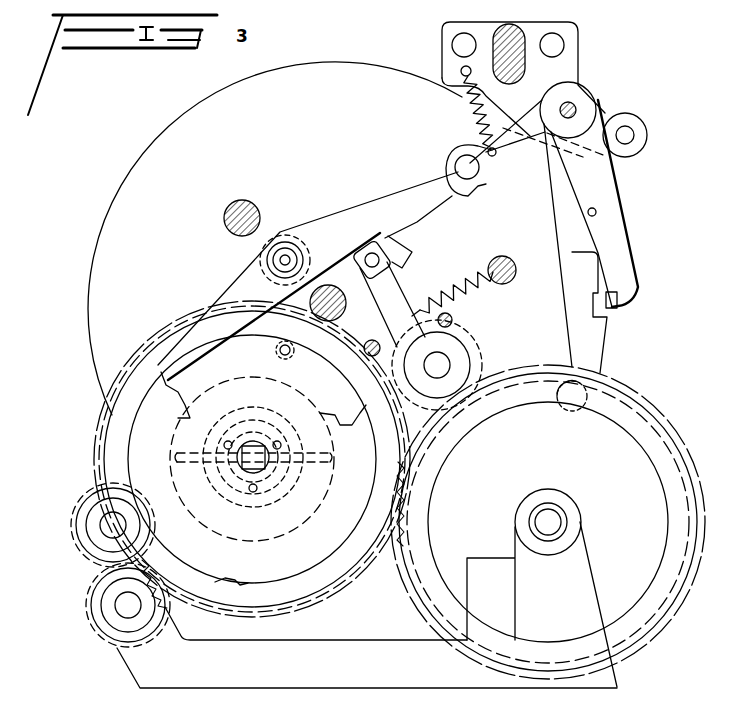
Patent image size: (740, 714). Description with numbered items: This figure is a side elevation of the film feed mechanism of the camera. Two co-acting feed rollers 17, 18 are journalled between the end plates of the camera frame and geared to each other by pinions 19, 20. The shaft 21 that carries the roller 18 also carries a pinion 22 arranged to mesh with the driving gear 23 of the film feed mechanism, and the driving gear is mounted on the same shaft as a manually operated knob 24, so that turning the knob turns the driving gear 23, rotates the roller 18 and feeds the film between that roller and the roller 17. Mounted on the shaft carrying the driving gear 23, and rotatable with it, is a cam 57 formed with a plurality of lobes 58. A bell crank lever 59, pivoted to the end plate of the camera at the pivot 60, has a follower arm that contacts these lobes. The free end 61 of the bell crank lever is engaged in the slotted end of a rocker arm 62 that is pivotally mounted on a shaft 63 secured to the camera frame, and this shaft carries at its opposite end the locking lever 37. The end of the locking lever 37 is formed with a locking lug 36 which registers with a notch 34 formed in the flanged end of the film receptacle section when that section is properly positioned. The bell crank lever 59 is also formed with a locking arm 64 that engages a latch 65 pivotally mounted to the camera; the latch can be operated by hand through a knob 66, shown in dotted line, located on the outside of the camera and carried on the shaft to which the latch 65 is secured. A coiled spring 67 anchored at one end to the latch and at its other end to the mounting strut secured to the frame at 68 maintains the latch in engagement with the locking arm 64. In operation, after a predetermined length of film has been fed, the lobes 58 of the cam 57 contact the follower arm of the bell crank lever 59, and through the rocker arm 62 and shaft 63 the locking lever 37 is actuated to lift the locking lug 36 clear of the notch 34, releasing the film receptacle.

The feed roller 17 is at (105, 525).
The feed roller 18 is at (118, 608).
The pinion 19 is at (80, 554).
The pinion 20 is at (112, 650).
The shaft 21 is at (124, 600).
The pinion 22 is at (178, 601).
The driving gear 23 is at (346, 589).
The manually operated knob 24 is at (185, 424).
The notch 34 is at (600, 310).
The locking lug 36 is at (614, 300).
The locking lever 37 is at (620, 262).
The cam 57 is at (277, 535).
The lobes 58 is at (252, 545).
The bell crank lever 59 is at (183, 378).
The pivot 60 is at (285, 255).
The free end 61 is at (375, 206).
The rocker arm 62 is at (498, 175).
The shaft 63 is at (576, 104).
The locking arm 64 is at (413, 258).
The latch 65 is at (372, 270).
The knob 66 is at (476, 338).
The coiled spring 67 is at (462, 276).
The mounting strut anchorage 68 is at (517, 271).